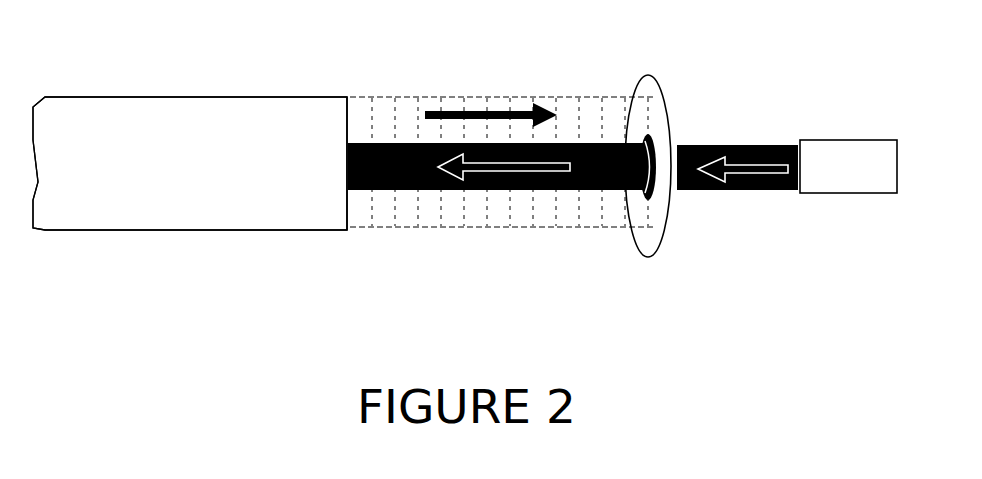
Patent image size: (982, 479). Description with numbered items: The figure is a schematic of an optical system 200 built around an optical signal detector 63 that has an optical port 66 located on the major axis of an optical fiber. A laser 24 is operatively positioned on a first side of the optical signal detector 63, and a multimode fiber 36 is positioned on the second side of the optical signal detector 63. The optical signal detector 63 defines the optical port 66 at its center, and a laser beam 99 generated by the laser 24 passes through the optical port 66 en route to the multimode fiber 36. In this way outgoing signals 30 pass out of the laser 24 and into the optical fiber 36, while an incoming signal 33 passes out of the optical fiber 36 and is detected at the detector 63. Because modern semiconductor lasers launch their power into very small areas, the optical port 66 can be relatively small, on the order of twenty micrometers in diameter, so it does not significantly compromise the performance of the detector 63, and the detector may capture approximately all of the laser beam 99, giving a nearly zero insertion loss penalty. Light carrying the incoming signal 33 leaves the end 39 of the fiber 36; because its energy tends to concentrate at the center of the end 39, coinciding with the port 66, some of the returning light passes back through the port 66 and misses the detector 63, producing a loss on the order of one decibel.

The optical system 200 is at (284, 72).
The multimode fiber 36 is at (282, 232).
The end of the fiber 39 is at (347, 115).
The incoming signal 33 is at (515, 108).
The outgoing signals 30 is at (483, 173).
The optical port 66 is at (638, 200).
The optical signal detector 63 is at (645, 243).
The laser beam 99 is at (745, 188).
The laser 24 is at (863, 197).